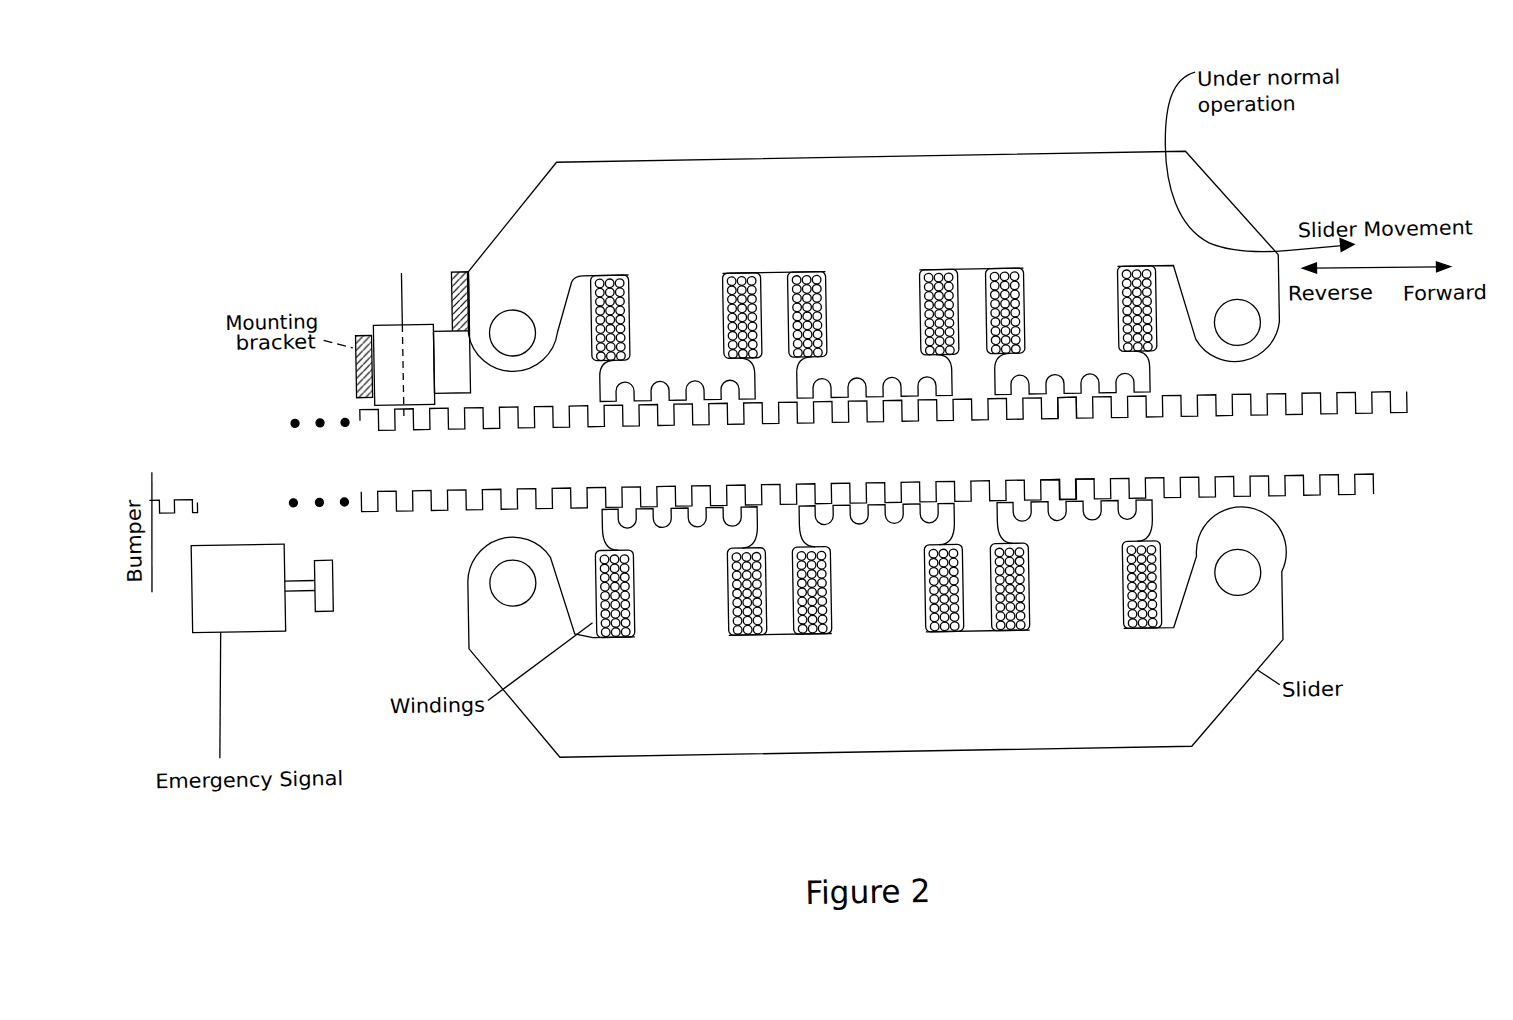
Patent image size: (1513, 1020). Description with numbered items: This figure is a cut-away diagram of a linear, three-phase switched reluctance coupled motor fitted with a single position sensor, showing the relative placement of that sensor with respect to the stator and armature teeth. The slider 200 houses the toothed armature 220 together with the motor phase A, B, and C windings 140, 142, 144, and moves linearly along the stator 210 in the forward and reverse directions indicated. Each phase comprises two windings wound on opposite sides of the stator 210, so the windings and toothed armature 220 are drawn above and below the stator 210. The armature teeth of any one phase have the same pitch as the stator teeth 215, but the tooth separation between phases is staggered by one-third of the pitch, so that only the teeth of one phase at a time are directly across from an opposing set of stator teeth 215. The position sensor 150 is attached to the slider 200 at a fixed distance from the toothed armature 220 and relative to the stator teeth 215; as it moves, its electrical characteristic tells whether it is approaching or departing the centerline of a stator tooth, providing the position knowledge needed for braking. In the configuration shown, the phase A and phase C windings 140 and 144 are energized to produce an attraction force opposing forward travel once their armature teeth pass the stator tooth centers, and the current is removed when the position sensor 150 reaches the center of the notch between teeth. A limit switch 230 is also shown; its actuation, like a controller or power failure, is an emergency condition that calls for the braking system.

The position sensor 150 is at (389, 324).
The slider 200 is at (1249, 232).
The stator 210 is at (1311, 409).
The stator teeth 215 is at (1068, 512).
The toothed armature 220 is at (1072, 366).
The phase A winding 140 is at (658, 782).
The phase B winding 142 is at (864, 785).
The phase C winding 144 is at (1050, 788).
The limit switch 230 is at (262, 587).